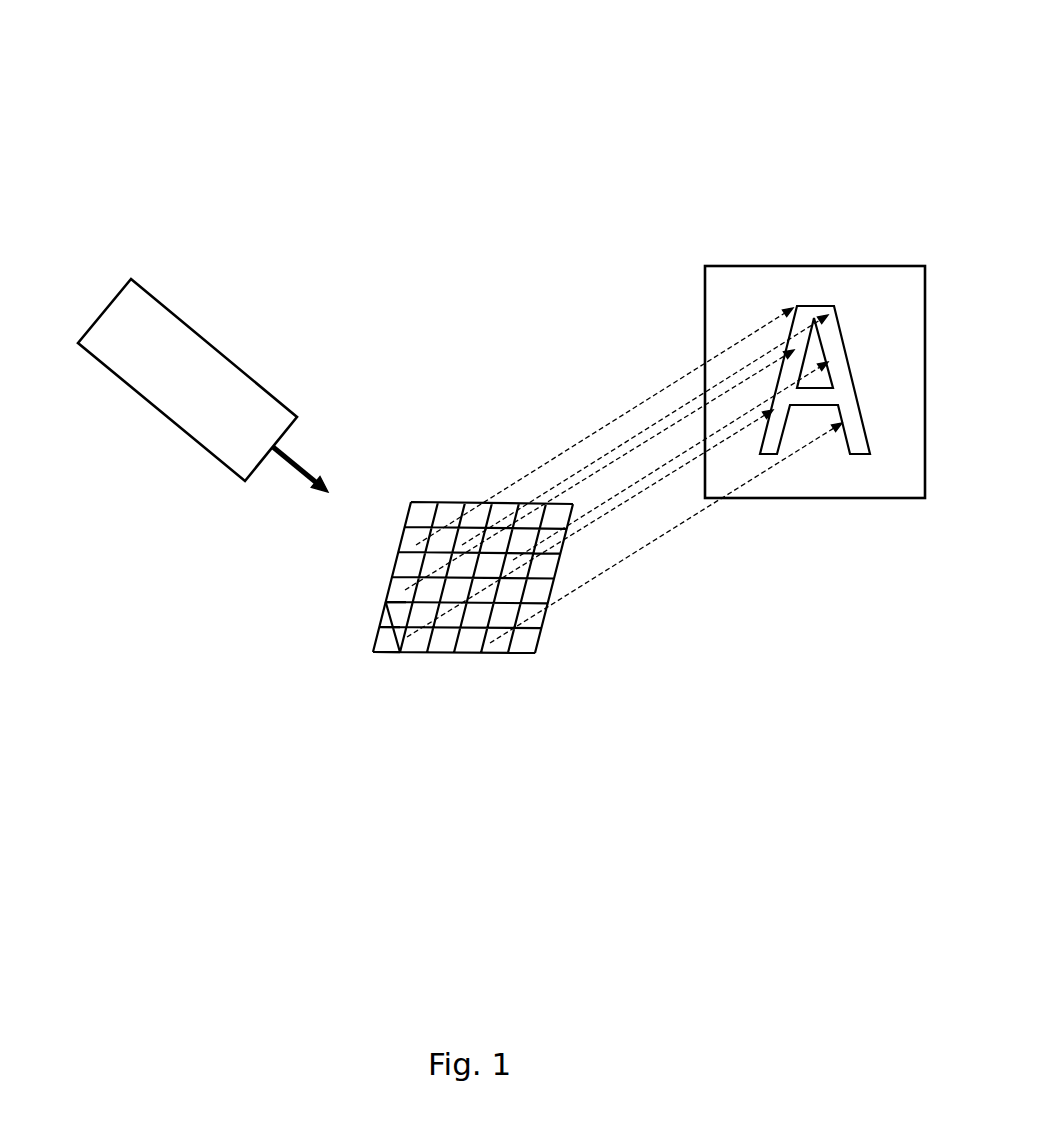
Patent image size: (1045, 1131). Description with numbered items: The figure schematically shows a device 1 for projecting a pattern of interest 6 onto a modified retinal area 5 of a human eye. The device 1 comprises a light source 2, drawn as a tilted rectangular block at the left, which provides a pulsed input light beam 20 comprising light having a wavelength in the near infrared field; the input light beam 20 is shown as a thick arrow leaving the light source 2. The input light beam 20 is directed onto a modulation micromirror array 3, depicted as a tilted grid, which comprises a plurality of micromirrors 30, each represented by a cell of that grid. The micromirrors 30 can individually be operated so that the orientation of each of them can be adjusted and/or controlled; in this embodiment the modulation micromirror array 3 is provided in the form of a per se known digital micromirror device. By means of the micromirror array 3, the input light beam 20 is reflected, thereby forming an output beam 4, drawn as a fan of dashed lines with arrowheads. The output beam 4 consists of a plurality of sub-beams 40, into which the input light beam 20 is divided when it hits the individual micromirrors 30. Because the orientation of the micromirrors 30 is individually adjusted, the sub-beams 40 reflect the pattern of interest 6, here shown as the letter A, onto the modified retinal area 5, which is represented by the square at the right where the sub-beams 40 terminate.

The device 1 is at (152, 140).
The light source 2 is at (218, 447).
The input light beam 20 is at (318, 440).
The modulation micromirror array 3 is at (428, 692).
The micromirrors 30 is at (388, 640).
The output beam 4 is at (603, 382).
The sub-beams 40 is at (657, 542).
The modified retinal area 5 is at (860, 287).
The pattern of interest 6 is at (858, 440).